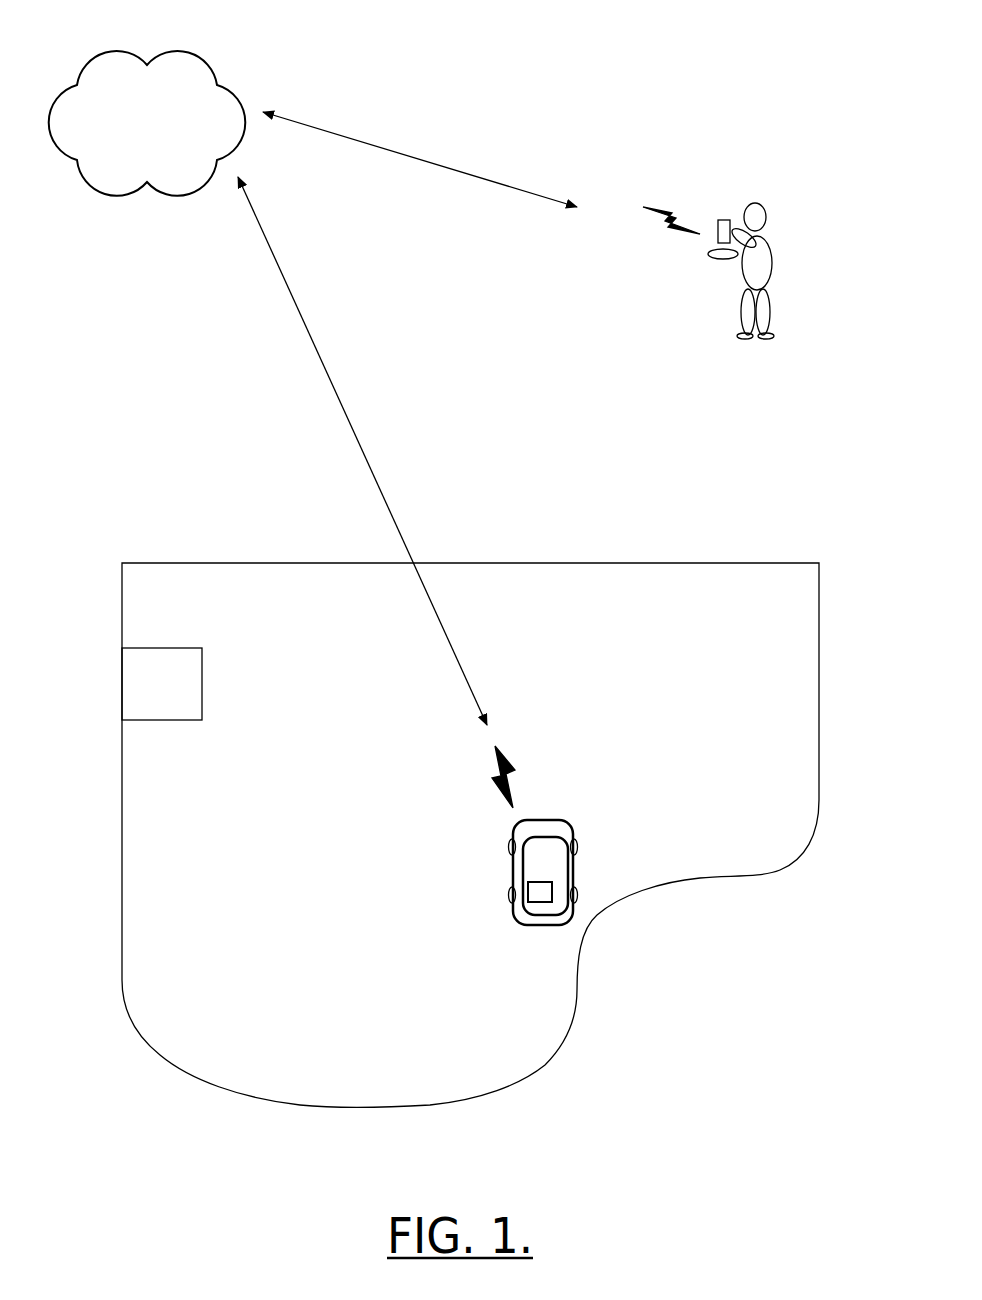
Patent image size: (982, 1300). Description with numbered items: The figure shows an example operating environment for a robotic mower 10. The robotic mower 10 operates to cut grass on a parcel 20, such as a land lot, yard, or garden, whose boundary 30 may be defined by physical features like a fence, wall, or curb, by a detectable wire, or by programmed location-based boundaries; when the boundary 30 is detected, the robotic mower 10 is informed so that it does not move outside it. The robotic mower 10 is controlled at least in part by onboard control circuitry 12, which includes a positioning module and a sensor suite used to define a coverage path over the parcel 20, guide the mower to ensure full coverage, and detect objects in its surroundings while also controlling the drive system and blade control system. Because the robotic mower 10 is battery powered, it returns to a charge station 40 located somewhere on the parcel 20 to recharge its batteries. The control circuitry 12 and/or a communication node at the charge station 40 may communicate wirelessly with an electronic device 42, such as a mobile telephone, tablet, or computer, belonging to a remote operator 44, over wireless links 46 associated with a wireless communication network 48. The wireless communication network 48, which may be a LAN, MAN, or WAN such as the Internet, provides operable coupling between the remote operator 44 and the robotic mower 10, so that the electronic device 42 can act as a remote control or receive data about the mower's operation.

The robotic mower 10 is at (575, 862).
The control circuitry 12 is at (543, 880).
The parcel 20 is at (343, 912).
The boundary 30 is at (577, 1012).
The charge station 40 is at (147, 682).
The electronic device 42 is at (726, 207).
The remote operator 44 is at (795, 205).
The wireless links 46 is at (310, 308).
The wireless communication network 48 is at (210, 62).